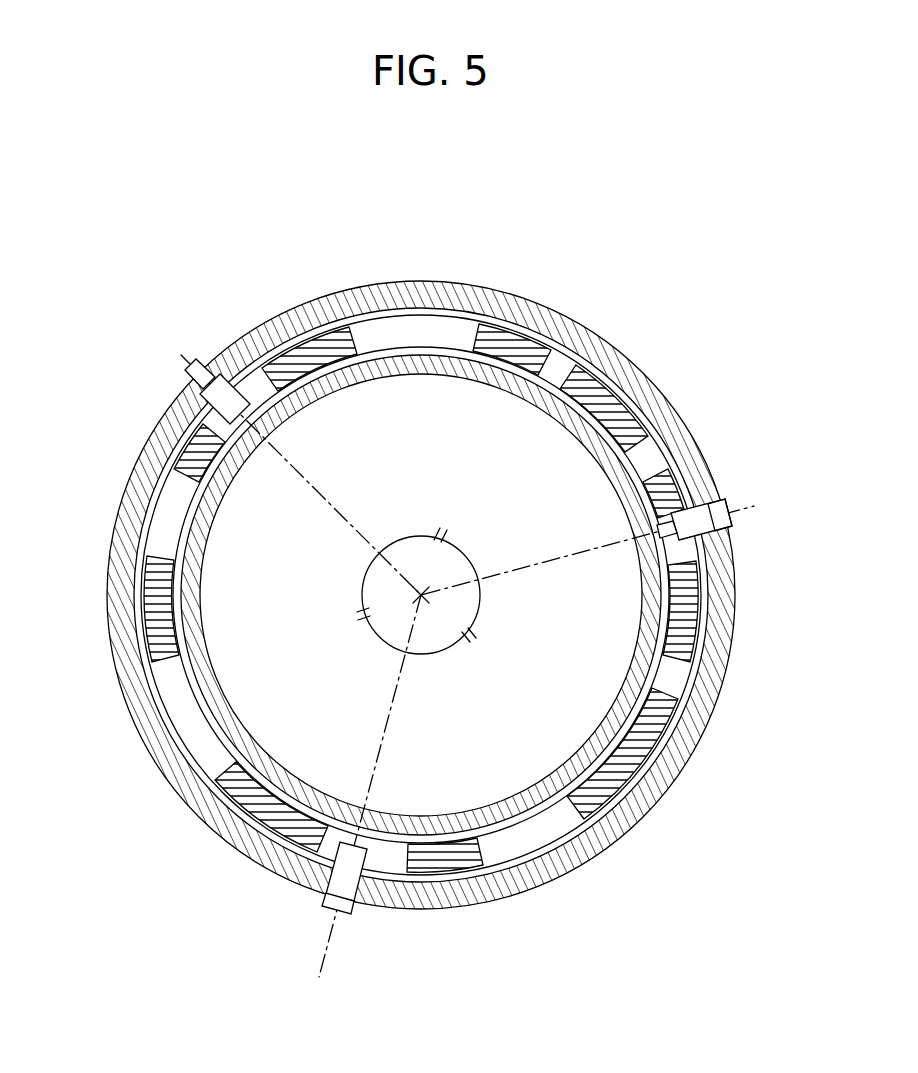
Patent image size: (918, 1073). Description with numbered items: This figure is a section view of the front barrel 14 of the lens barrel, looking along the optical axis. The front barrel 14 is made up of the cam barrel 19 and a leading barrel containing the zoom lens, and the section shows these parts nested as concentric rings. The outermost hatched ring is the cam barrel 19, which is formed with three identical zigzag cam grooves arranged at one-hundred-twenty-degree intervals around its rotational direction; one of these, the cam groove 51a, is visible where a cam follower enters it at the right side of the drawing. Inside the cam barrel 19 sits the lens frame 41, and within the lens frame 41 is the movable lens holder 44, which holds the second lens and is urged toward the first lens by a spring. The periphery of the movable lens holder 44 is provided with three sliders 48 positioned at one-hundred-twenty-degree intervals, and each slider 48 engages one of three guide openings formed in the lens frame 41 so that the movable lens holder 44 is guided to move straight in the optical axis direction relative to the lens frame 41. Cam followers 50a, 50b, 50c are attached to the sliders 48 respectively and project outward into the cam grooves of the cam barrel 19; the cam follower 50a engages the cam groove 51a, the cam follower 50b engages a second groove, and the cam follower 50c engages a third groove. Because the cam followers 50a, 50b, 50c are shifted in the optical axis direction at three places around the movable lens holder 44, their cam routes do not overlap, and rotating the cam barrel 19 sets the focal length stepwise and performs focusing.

The front barrel 14 is at (208, 868).
The cam barrel 19 is at (431, 282).
The lens frame 41 is at (527, 343).
The movable lens holder 44 is at (555, 402).
The slider 48 is at (200, 425).
The cam follower 50a is at (742, 503).
The cam follower 50b is at (185, 372).
The cam follower 50c is at (350, 906).
The cam groove 51a is at (736, 536).